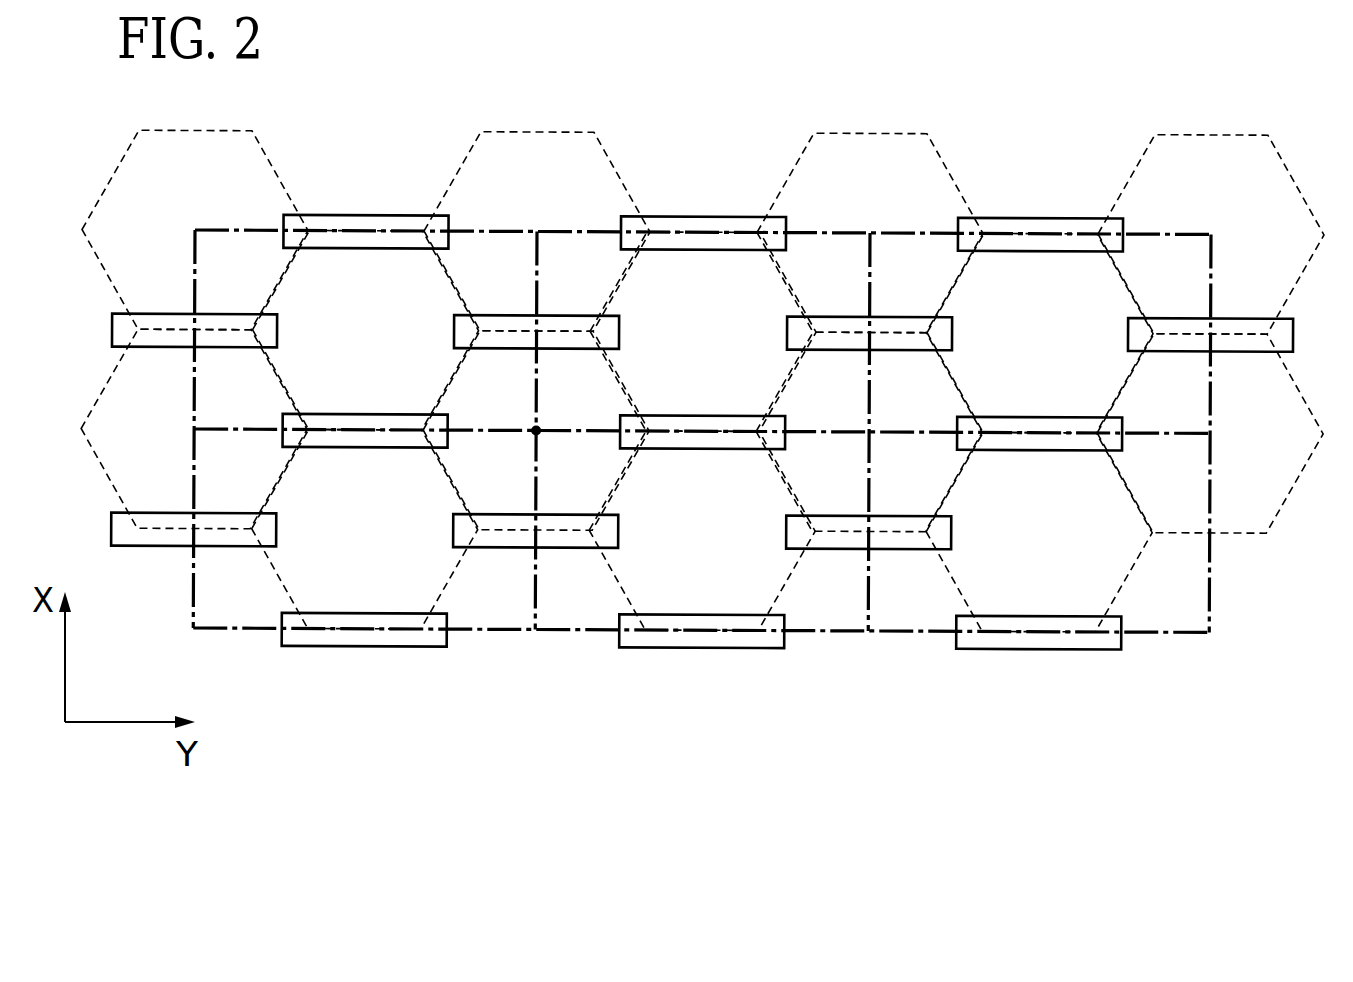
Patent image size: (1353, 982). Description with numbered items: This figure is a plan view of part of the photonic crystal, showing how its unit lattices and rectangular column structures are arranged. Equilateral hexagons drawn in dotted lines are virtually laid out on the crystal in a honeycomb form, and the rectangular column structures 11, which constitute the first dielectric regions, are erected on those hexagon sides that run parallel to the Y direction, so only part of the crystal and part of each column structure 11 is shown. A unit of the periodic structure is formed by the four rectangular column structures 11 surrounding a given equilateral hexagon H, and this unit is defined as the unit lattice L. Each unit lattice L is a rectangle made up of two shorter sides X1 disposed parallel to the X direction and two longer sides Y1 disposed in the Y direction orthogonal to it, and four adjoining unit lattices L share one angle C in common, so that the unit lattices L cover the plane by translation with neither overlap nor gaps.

The rectangular column structure 11 is at (363, 215).
The shorter side X1 is at (193, 297).
The longer side Y1 is at (220, 228).
The unit lattice L is at (709, 386).
The equilateral hexagon H is at (441, 392).
The angle C is at (541, 428).